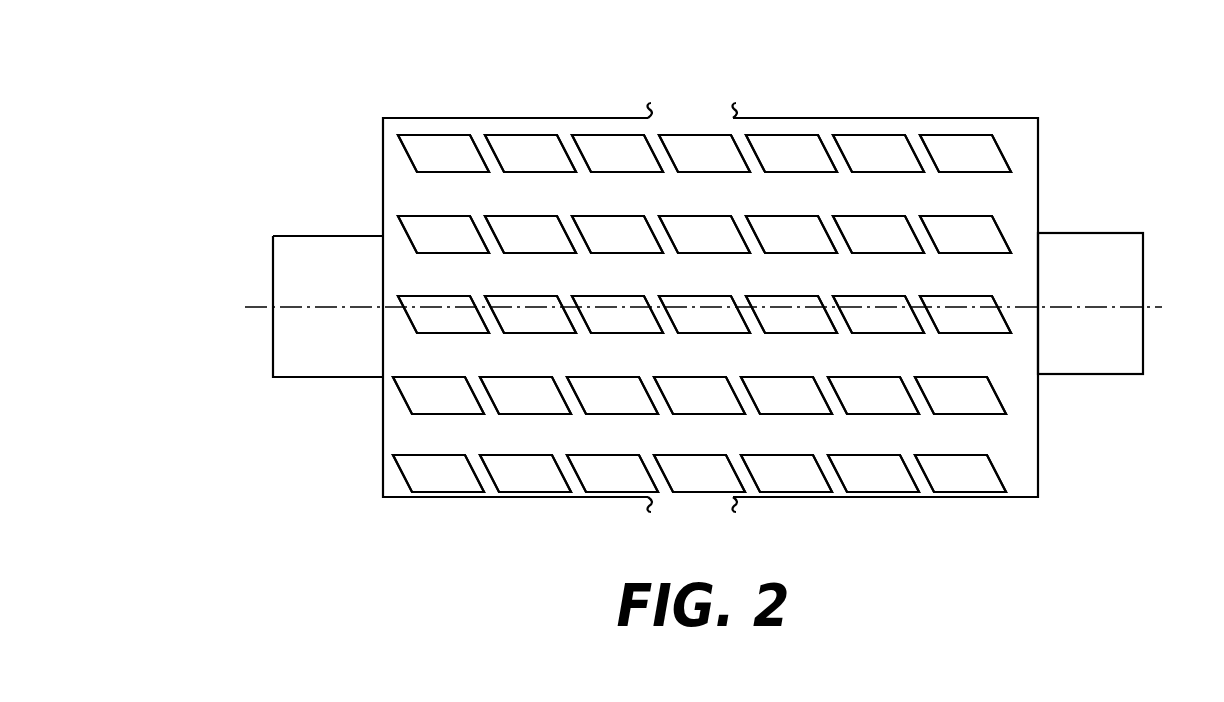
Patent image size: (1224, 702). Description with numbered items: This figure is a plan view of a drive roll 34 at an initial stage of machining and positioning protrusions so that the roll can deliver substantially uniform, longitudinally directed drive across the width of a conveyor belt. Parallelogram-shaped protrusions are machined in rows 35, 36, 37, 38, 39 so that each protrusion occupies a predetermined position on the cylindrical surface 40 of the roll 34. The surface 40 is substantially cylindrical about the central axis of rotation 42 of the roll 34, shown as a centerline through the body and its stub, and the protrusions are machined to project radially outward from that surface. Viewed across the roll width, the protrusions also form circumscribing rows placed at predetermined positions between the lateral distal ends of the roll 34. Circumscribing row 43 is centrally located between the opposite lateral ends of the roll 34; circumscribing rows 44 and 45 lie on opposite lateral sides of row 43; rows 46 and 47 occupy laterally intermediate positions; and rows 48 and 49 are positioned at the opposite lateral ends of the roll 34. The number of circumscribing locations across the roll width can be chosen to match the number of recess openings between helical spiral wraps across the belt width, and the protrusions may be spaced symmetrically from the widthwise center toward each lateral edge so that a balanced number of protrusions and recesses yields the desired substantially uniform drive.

The roll 34 is at (715, 307).
The row of protrusions 35 is at (373, 157).
The row of protrusions 36 is at (373, 244).
The row of protrusions 37 is at (373, 324).
The row of protrusions 38 is at (373, 397).
The row of protrusions 39 is at (373, 477).
The cylindrical surface 40 is at (962, 210).
The central axis of rotation 42 is at (1162, 307).
The circumscribing row 43 is at (702, 133).
The circumscribing row 44 is at (617, 133).
The circumscribing row 45 is at (789, 133).
The circumscribing row 46 is at (532, 133).
The circumscribing row 47 is at (875, 133).
The circumscribing row 48 is at (443, 133).
The circumscribing row 49 is at (962, 133).